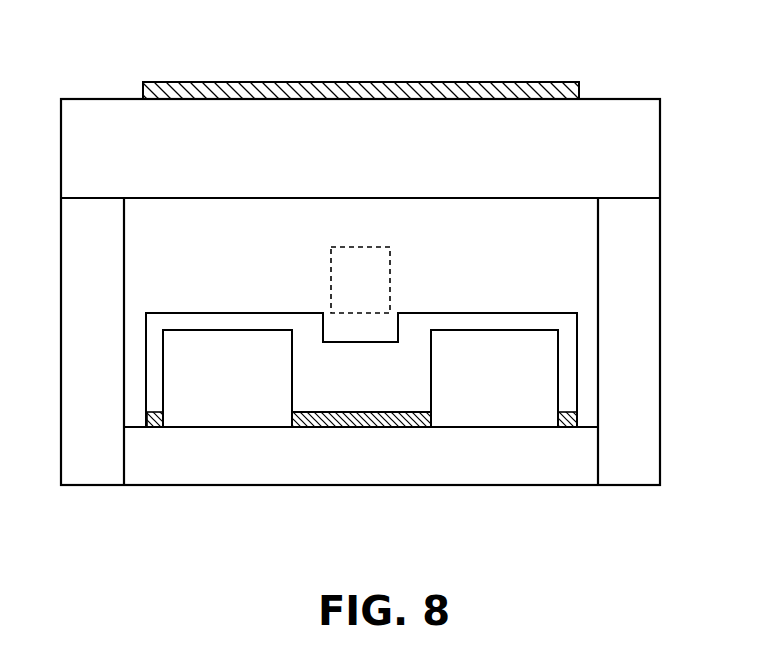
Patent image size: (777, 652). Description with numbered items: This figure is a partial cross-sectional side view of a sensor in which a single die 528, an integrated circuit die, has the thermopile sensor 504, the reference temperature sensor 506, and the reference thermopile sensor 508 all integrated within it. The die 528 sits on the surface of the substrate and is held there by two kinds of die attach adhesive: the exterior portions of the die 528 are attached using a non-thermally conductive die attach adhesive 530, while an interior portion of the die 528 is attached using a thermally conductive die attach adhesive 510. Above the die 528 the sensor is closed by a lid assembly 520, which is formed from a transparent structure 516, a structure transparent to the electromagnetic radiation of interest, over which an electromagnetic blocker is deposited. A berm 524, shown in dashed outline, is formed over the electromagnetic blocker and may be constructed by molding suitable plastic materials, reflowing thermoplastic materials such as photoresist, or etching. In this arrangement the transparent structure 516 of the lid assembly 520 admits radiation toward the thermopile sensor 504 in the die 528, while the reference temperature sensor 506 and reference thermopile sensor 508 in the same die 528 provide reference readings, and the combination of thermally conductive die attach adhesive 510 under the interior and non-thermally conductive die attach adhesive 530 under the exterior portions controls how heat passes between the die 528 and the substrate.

The lid assembly 520 is at (618, 43).
The transparent structure 516 is at (624, 110).
The die 528 is at (447, 330).
The berm 524 is at (391, 258).
The reference thermopile sensor 508 is at (180, 373).
The reference temperature sensor 506 is at (333, 328).
The thermopile sensor 504 is at (440, 375).
The die attach adhesive 510 is at (363, 420).
The die attach adhesive 530 is at (163, 418).